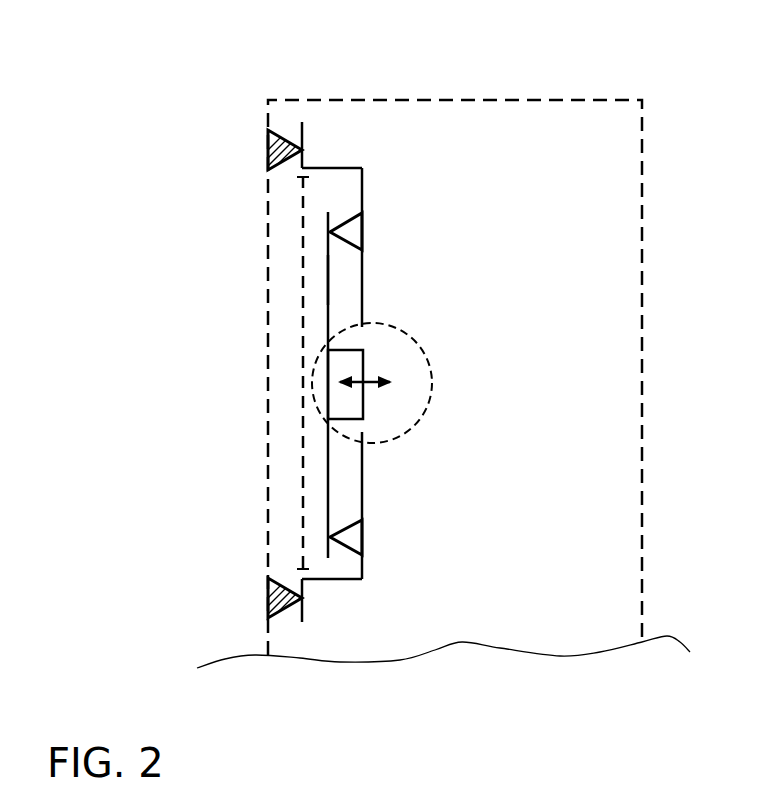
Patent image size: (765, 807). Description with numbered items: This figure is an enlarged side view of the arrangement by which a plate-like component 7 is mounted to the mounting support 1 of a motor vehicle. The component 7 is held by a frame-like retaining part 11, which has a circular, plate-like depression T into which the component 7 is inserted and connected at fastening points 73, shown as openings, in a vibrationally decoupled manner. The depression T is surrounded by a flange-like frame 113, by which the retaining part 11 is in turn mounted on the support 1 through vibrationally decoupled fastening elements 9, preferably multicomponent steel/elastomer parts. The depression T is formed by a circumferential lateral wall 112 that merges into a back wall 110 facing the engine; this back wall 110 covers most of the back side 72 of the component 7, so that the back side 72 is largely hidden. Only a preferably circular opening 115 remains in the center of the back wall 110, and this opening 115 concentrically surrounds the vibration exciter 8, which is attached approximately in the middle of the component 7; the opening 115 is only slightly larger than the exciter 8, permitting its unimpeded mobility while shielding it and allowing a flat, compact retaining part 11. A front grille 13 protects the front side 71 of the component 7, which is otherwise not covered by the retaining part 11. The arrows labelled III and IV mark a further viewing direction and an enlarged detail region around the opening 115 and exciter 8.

The mounting support 1 is at (267, 98).
The plate-like component 7 is at (328, 212).
The vibration exciter 8 is at (353, 407).
The fastening elements 9 is at (275, 152).
The frame-like retaining part 11 is at (365, 166).
The front grille 13 is at (303, 453).
The front side 71 is at (326, 268).
The back side 72 is at (332, 291).
The fastening points 73 is at (357, 232).
The back wall 110 is at (408, 505).
The lateral wall 112 is at (322, 168).
The flange-like frame 113 is at (302, 127).
The opening 115 is at (362, 344).
The depression T is at (321, 186).
The view III is at (216, 359).
The detail IV is at (432, 387).